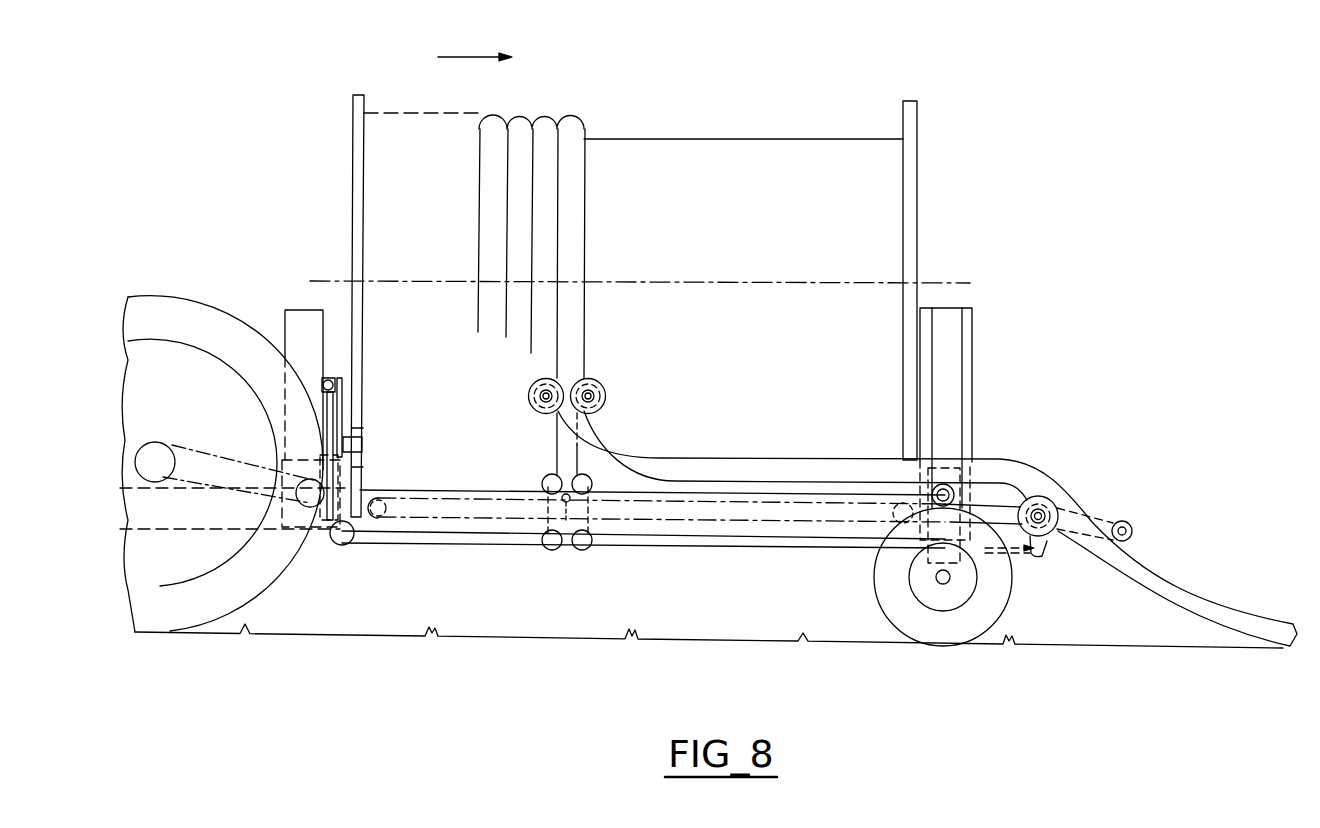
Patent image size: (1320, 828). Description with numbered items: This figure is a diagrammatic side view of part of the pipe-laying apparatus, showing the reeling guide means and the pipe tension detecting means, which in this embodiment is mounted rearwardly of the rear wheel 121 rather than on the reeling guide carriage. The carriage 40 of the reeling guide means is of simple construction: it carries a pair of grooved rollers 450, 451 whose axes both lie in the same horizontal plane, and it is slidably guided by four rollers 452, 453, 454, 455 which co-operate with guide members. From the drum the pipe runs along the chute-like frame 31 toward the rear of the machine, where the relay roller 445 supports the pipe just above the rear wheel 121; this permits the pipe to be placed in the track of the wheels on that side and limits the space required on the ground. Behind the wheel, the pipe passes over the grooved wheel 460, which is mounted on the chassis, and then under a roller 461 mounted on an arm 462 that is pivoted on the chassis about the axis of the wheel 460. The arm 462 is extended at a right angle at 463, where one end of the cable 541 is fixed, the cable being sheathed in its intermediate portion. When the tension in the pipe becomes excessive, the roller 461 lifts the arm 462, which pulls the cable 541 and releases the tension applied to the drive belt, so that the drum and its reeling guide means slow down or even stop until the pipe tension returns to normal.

The chute frame 31 is at (768, 460).
The carriage 40 is at (556, 452).
The rear wheel 121 is at (886, 616).
The relay roller 445 is at (890, 500).
The grooved roller 450 is at (530, 390).
The grooved roller 451 is at (603, 390).
The guide roller 452 is at (542, 484).
The guide roller 453 is at (545, 548).
The guide roller 454 is at (585, 550).
The guide roller 455 is at (594, 479).
The grooved wheel 460 is at (1046, 496).
The roller 461 is at (1132, 526).
The arm 462 is at (1102, 519).
The right-angle extension of arm 463 is at (1047, 545).
The cable 541 is at (1028, 558).